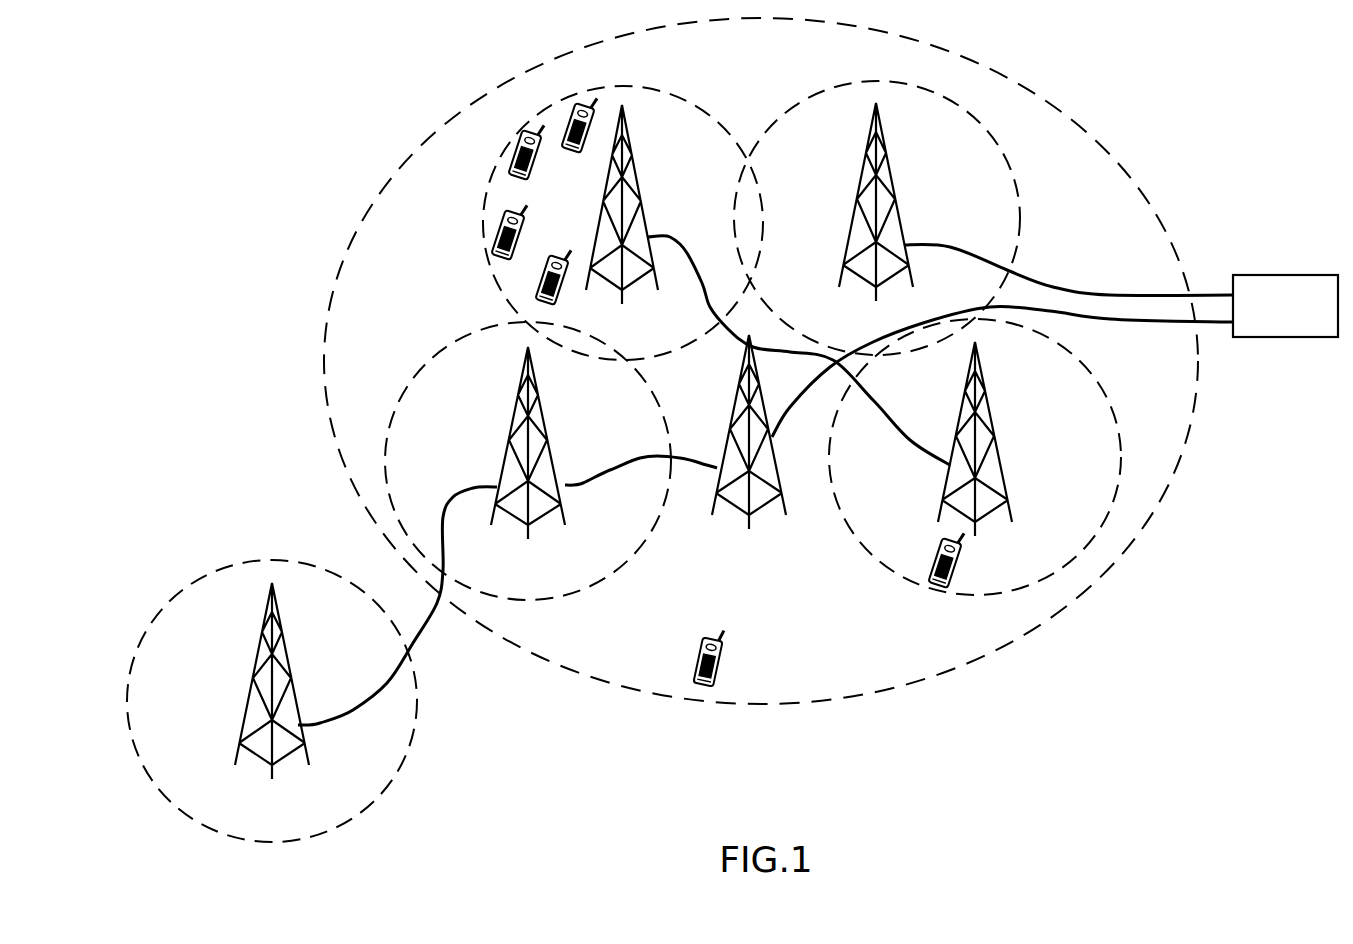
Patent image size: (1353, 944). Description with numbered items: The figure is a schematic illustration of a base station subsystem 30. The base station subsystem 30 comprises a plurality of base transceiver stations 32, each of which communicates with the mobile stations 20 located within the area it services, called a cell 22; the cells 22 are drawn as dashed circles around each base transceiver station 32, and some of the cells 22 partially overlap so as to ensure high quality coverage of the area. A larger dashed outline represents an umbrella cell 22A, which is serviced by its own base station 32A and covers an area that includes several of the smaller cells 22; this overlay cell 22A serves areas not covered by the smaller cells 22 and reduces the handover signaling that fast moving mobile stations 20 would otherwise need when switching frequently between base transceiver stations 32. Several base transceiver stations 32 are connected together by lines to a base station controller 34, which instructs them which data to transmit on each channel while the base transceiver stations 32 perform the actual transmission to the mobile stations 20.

The mobile station 20 is at (574, 148).
The cell 22 is at (687, 96).
The umbrella cell 22A is at (1183, 262).
The base station subsystem 30 is at (1227, 103).
The base transceiver station 32 is at (638, 168).
The base station 32A is at (725, 447).
The base station controller 34 is at (1263, 275).